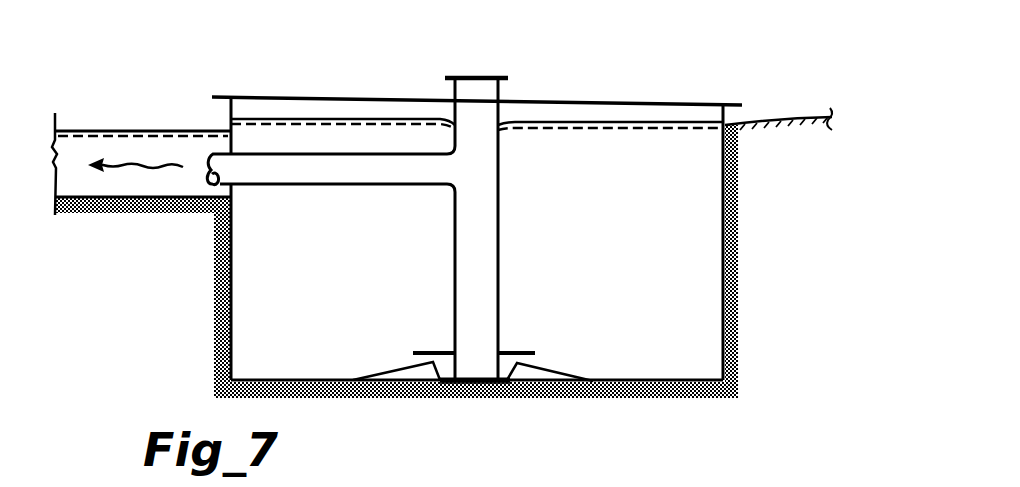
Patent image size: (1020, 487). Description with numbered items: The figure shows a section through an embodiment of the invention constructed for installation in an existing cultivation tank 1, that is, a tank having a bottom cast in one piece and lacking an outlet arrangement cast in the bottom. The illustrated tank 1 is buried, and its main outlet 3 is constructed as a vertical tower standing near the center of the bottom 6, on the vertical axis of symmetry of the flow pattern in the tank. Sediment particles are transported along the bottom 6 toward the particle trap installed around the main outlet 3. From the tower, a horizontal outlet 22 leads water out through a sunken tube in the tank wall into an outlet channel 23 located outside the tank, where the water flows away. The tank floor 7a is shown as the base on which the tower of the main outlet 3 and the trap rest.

The cultivation tank 1 is at (647, 76).
The main outlet 3 is at (483, 240).
The bottom 6 is at (660, 383).
The tank floor 7a is at (516, 420).
The horizontal outlet 22 is at (323, 173).
The outlet channel 23 is at (157, 150).